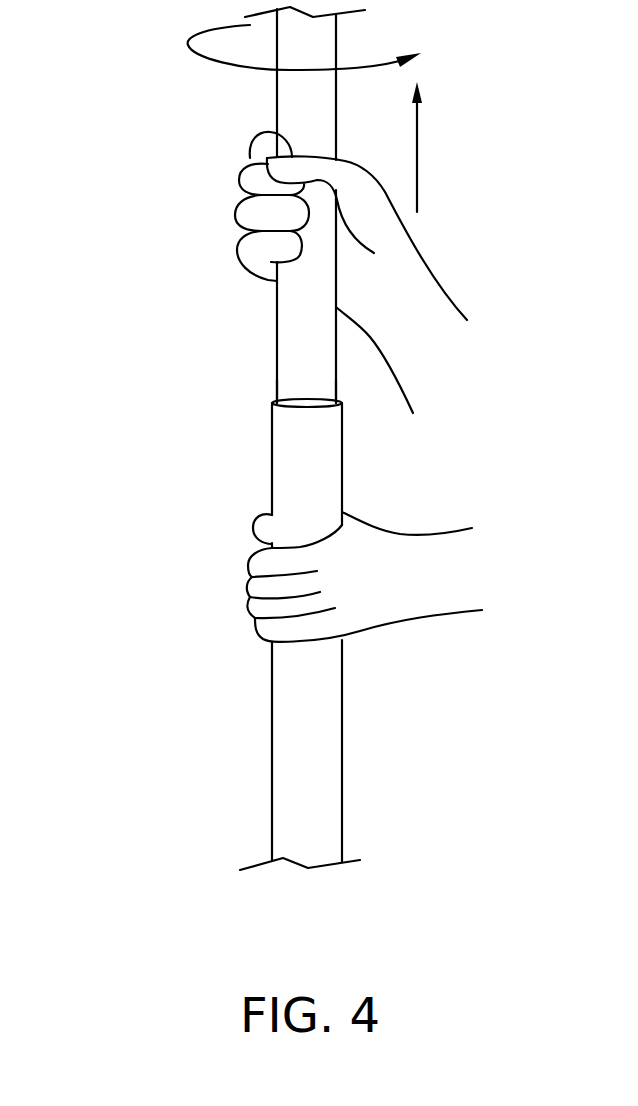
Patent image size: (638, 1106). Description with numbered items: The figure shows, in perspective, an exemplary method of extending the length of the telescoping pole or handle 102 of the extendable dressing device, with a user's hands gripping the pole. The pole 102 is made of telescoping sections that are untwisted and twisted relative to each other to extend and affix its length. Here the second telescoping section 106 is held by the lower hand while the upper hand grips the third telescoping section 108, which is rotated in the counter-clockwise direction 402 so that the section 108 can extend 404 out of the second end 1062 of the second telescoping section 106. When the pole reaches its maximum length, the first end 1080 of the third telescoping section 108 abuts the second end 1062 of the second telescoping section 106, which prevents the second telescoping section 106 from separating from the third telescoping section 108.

The telescoping pole or handle 102 is at (233, 128).
The third telescoping section 108 is at (291, 133).
The first end of the third telescoping section 1080 is at (308, 400).
The second telescoping section 106 is at (298, 498).
The second end of the second telescoping section 1062 is at (307, 414).
The counter-clockwise direction 402 is at (372, 68).
The extend 404 is at (417, 148).